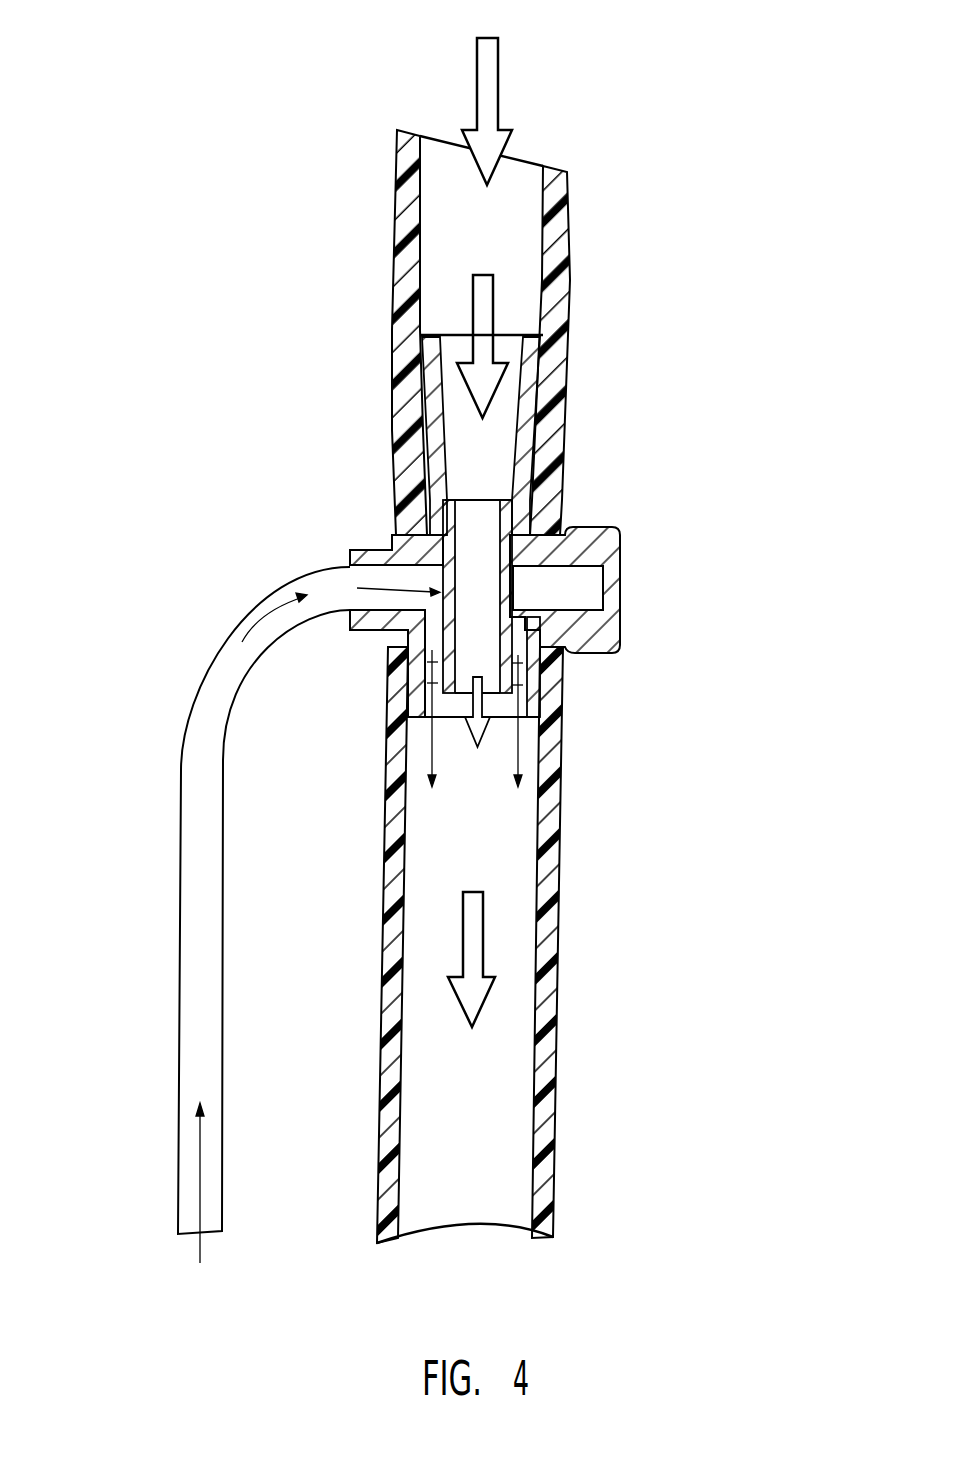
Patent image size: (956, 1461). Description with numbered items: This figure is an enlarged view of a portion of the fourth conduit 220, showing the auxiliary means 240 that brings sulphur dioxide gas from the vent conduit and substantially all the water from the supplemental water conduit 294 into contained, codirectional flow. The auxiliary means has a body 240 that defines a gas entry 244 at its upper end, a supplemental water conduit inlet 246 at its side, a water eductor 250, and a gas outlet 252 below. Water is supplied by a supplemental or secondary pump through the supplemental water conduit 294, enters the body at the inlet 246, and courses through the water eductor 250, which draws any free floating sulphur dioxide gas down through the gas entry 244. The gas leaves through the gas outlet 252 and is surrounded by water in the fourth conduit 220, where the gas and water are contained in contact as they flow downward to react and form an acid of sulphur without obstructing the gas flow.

The fourth conduit 220 is at (547, 995).
The auxiliary means 240 is at (525, 502).
The gas entry 244 is at (510, 348).
The supplemental water conduit inlet 246 is at (384, 548).
The water eductor 250 is at (415, 703).
The gas outlet 252 is at (460, 690).
The supplemental water conduit 294 is at (188, 790).